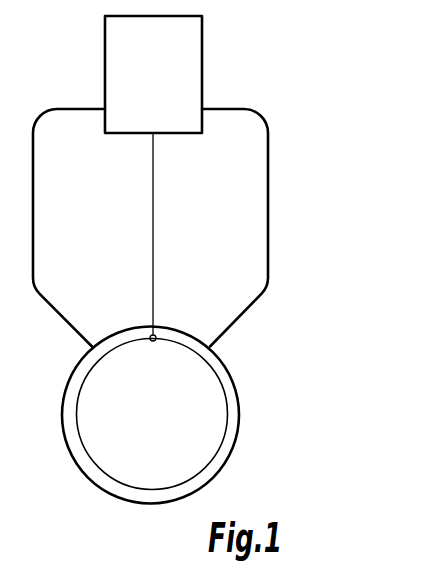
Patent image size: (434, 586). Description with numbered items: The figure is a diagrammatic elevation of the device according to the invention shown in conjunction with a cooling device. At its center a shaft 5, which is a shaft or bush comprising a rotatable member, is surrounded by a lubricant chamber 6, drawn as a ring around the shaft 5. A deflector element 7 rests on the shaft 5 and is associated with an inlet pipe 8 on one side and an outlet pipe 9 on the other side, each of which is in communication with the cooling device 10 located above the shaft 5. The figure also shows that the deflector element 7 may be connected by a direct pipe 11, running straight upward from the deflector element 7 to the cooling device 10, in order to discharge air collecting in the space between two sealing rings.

The shaft 5 is at (216, 417).
The lubricant chamber 6 is at (70, 433).
The deflector element 7 is at (152, 341).
The inlet pipe 8 is at (252, 313).
The outlet pipe 9 is at (55, 317).
The cooling device 10 is at (195, 83).
The direct pipe 11 is at (152, 230).